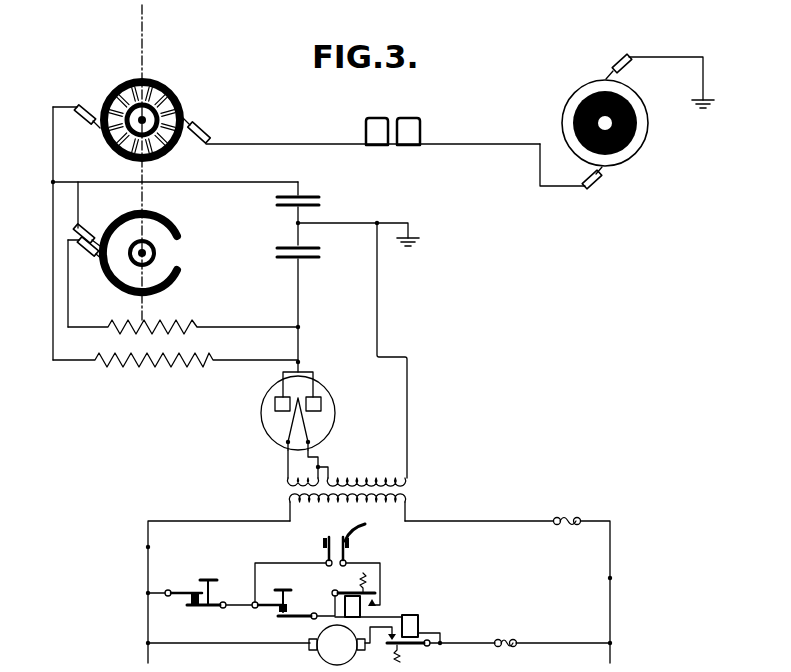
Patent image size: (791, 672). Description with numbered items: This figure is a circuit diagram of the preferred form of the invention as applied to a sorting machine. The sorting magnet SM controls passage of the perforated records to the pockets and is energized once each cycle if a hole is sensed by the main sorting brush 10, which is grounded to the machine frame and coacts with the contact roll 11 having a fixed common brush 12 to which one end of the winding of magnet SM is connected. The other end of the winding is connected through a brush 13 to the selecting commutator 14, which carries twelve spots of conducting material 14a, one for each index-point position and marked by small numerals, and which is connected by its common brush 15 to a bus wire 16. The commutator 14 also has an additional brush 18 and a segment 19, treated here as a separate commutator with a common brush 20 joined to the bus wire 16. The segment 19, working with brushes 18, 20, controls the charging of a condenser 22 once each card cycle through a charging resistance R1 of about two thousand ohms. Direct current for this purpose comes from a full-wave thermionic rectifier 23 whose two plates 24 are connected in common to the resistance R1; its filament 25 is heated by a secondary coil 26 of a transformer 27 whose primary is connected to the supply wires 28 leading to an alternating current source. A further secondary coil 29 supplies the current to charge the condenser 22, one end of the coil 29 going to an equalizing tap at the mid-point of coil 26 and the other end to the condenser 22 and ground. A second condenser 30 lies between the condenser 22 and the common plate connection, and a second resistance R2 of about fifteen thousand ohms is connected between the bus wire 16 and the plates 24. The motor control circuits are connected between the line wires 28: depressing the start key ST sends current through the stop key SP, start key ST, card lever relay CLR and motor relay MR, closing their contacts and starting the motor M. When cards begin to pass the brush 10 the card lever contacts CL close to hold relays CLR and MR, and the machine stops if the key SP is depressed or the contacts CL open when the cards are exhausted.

The main sorting brush 10 is at (613, 63).
The contact roll 11 is at (631, 151).
The common brush 12 is at (591, 184).
The brush 13 is at (209, 137).
The selecting commutator 14 is at (108, 88).
The spots of conducting material 14a is at (180, 98).
The common brush 15 is at (80, 117).
The bus wire 16 is at (53, 160).
The additional brush 18 is at (85, 256).
The commutator segment 19 is at (178, 252).
The common brush 20 is at (86, 230).
The condenser 22 is at (280, 199).
The thermionic rectifier 23 is at (333, 396).
The plates 24 is at (275, 406).
The filament 25 is at (305, 430).
The secondary coil 26 is at (288, 468).
The transformer 27 is at (406, 497).
The supply wires 28 is at (150, 548).
The secondary coil 29 is at (345, 480).
The second condenser 30 is at (282, 254).
The sorting magnet SM is at (412, 129).
The charging resistance R1 is at (174, 328).
The second resistance R2 is at (171, 362).
The stop key SP is at (216, 587).
The start key ST is at (293, 598).
The card lever contacts CL is at (340, 535).
The card lever relay CLR is at (362, 610).
The motor relay MR is at (419, 625).
The motor M is at (272, 645).